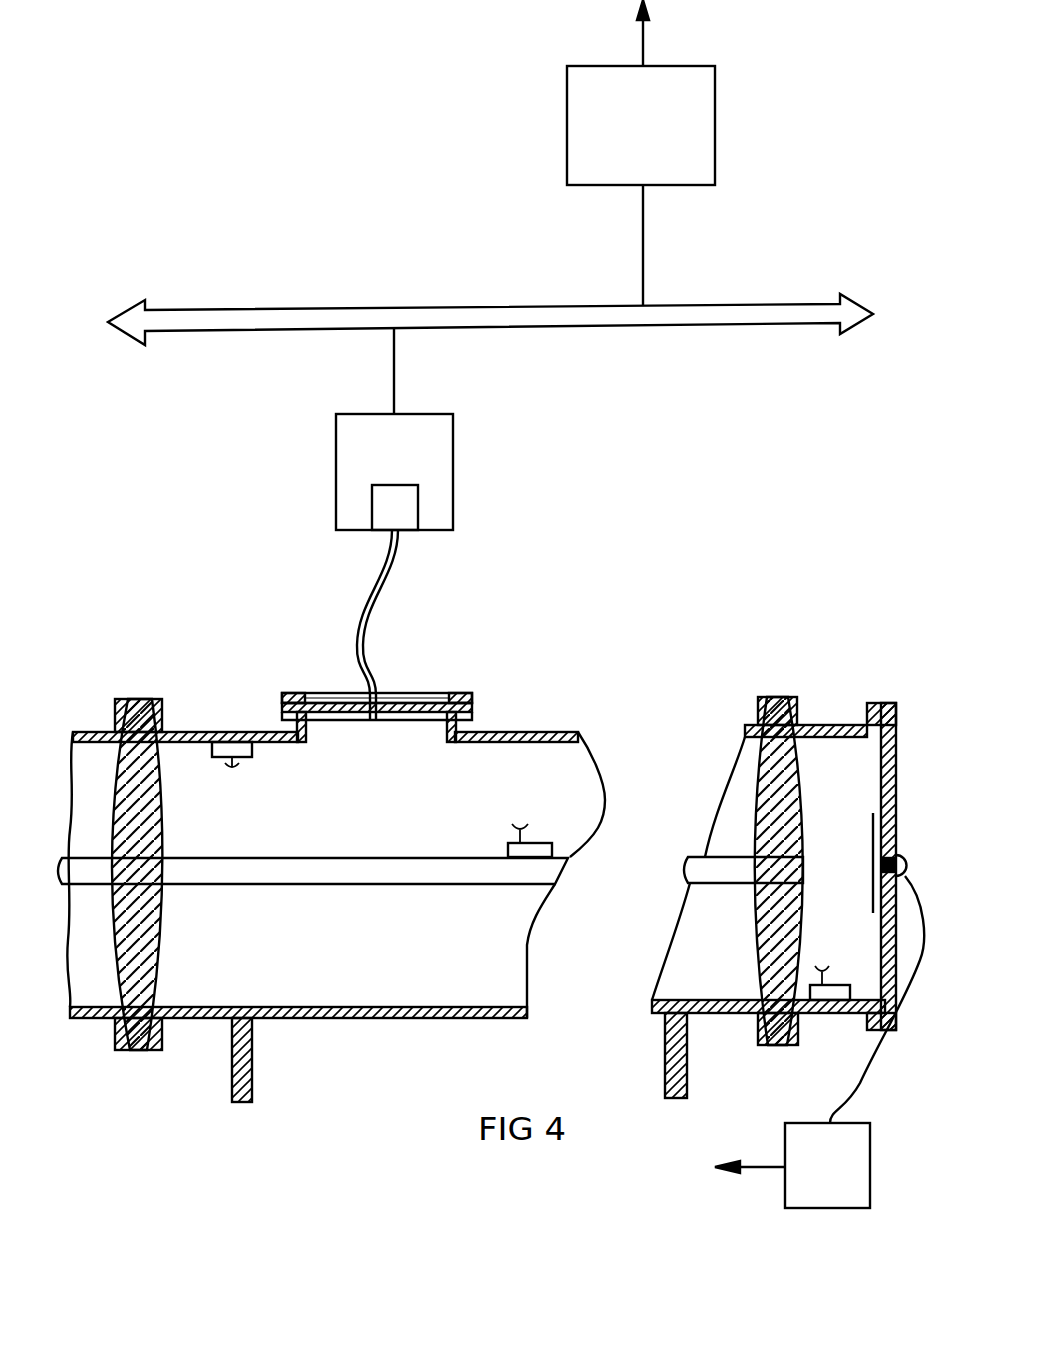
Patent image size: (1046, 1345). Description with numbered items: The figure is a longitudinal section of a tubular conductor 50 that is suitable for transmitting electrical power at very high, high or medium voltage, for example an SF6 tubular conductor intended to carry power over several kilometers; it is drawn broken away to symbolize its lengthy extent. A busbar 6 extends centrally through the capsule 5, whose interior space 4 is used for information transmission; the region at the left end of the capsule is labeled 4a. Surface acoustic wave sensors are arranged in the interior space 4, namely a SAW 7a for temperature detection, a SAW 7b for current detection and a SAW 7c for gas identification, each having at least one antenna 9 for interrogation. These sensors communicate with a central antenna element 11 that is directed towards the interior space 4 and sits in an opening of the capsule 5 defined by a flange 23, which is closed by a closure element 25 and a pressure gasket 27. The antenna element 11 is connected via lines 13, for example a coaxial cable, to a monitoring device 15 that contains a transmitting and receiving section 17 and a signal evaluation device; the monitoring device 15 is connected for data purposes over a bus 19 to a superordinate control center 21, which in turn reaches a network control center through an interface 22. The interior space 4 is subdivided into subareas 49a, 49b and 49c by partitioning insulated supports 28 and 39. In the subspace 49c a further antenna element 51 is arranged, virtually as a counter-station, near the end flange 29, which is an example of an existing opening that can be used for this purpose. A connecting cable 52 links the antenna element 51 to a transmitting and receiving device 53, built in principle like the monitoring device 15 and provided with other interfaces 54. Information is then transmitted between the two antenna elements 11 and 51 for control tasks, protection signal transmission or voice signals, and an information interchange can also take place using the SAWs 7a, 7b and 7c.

The interior space 4 is at (408, 977).
The housing end portion 4a is at (97, 980).
The capsule 5 is at (364, 1005).
The busbar 6 is at (482, 872).
The SAW for temperature detection 7a is at (218, 760).
The SAW for current detection 7b is at (540, 843).
The SAW for gas identification 7c is at (838, 985).
The antenna 9 is at (240, 766).
The antenna element 11 is at (355, 722).
The lines 13 is at (378, 600).
The monitoring device 15 is at (453, 432).
The transmitting and receiving section 17 is at (418, 505).
The bus 19 is at (356, 306).
The control center 21 is at (715, 130).
The interface 22 is at (643, 42).
The flange 23 is at (472, 707).
The closure element 25 is at (472, 698).
The pressure gasket 27 is at (292, 693).
The insulated support 28 is at (770, 937).
The end flange 29 is at (873, 705).
The insulated support 39 is at (150, 918).
The subarea 49a is at (100, 768).
The subarea 49b is at (188, 762).
The subarea 49c is at (838, 742).
The tubular conductor 50 is at (468, 1018).
The antenna element 51 is at (870, 830).
The connecting cable 52 is at (866, 1076).
The transmitting and receiving device 53 is at (785, 1143).
The interfaces 54 is at (760, 1170).